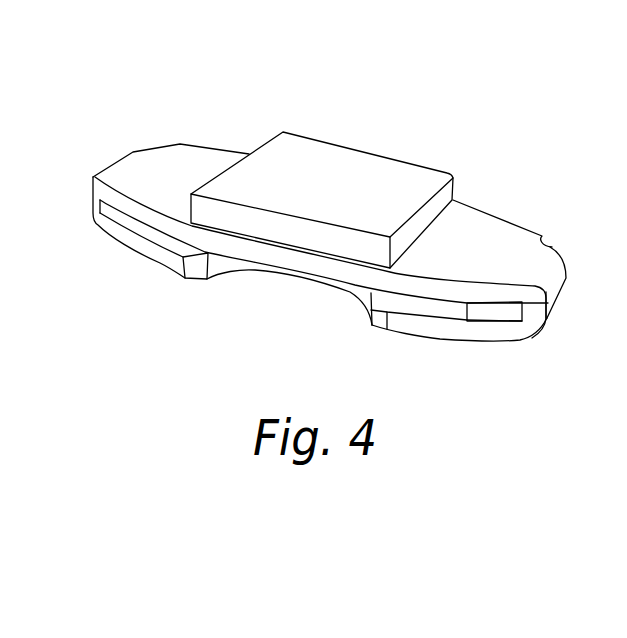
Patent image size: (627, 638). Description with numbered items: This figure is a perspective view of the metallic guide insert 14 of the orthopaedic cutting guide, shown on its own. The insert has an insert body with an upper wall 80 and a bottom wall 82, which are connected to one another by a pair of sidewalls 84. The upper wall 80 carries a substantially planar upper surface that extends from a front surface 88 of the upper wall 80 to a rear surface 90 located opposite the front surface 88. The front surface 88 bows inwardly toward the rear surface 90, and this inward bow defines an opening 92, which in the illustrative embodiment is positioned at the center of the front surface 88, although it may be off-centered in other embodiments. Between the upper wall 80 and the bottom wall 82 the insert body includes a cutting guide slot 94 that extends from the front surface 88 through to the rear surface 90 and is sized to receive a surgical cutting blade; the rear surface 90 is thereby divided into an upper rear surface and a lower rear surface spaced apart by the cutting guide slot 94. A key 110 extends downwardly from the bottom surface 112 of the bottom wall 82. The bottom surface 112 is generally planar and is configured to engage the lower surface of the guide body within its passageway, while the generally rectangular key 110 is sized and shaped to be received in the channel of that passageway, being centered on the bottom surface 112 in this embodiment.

The metallic guide insert 14 is at (473, 108).
The upper wall 80 is at (130, 243).
The bottom wall 82 is at (473, 297).
The sidewalls 84 is at (528, 310).
The front surface 88 is at (425, 327).
The rear surface 90 is at (495, 212).
The opening 92 is at (288, 293).
The cutting guide slot 94 is at (405, 310).
The key 110 is at (383, 168).
The bottom surface 112 is at (162, 163).